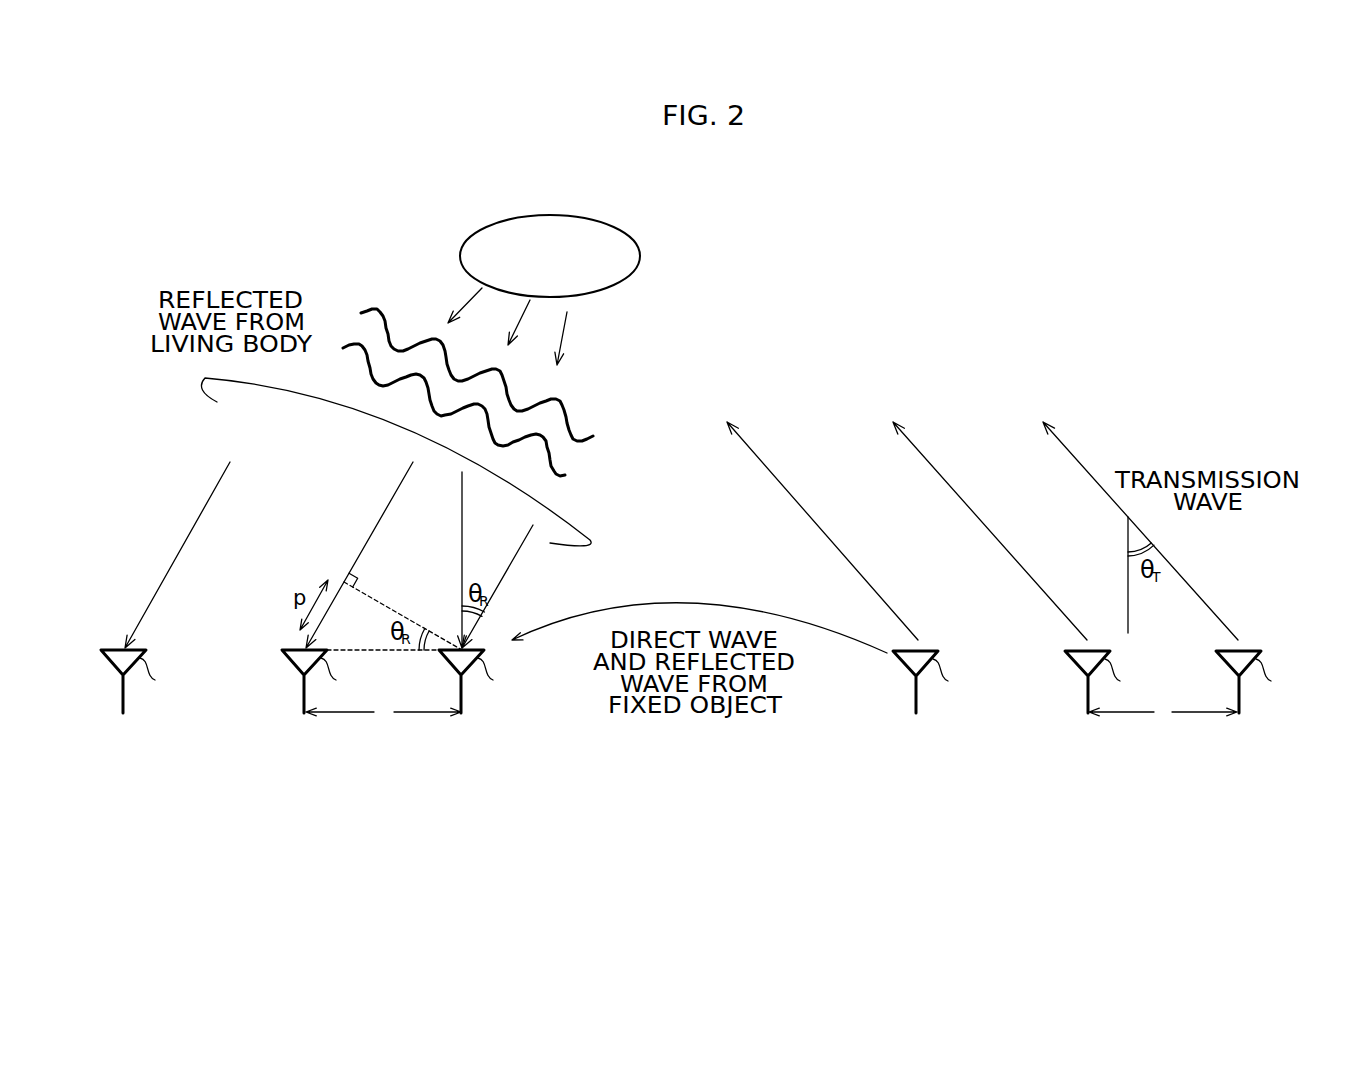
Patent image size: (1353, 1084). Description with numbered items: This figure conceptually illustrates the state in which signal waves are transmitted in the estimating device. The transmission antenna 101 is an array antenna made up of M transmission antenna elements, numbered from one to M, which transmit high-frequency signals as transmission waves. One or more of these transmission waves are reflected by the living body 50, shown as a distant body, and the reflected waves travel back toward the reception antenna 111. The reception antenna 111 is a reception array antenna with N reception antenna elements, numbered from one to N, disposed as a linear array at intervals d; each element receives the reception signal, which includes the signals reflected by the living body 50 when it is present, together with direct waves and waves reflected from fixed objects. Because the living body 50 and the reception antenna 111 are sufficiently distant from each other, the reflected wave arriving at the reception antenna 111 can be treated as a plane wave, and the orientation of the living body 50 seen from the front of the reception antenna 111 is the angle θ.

The living body 50 is at (618, 282).
The reception antenna 111 is at (505, 715).
The transmission antenna 101 is at (897, 718).